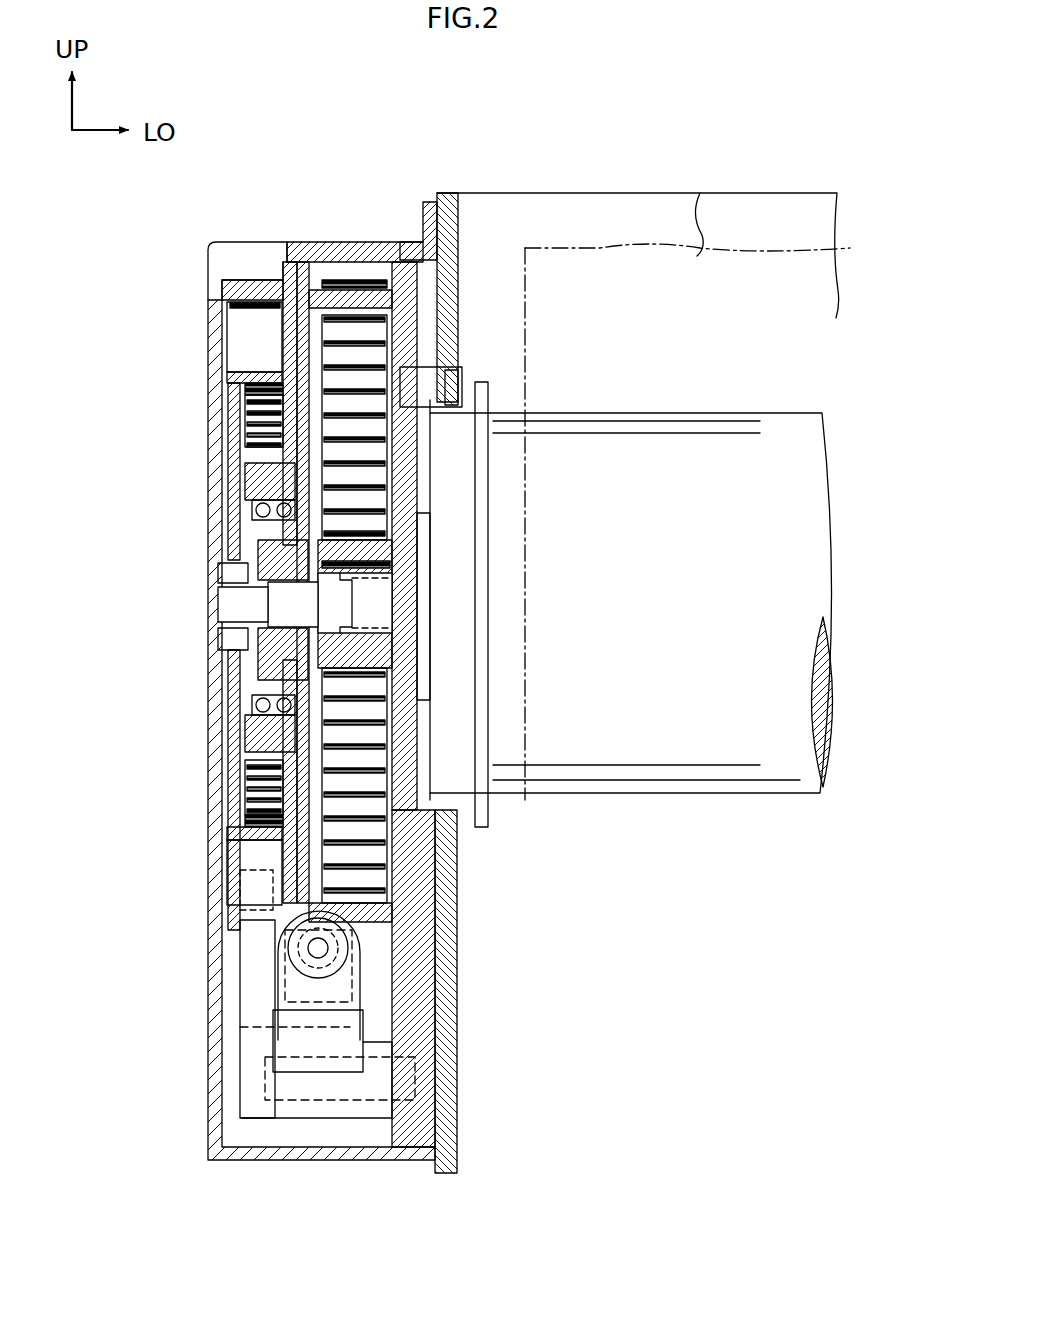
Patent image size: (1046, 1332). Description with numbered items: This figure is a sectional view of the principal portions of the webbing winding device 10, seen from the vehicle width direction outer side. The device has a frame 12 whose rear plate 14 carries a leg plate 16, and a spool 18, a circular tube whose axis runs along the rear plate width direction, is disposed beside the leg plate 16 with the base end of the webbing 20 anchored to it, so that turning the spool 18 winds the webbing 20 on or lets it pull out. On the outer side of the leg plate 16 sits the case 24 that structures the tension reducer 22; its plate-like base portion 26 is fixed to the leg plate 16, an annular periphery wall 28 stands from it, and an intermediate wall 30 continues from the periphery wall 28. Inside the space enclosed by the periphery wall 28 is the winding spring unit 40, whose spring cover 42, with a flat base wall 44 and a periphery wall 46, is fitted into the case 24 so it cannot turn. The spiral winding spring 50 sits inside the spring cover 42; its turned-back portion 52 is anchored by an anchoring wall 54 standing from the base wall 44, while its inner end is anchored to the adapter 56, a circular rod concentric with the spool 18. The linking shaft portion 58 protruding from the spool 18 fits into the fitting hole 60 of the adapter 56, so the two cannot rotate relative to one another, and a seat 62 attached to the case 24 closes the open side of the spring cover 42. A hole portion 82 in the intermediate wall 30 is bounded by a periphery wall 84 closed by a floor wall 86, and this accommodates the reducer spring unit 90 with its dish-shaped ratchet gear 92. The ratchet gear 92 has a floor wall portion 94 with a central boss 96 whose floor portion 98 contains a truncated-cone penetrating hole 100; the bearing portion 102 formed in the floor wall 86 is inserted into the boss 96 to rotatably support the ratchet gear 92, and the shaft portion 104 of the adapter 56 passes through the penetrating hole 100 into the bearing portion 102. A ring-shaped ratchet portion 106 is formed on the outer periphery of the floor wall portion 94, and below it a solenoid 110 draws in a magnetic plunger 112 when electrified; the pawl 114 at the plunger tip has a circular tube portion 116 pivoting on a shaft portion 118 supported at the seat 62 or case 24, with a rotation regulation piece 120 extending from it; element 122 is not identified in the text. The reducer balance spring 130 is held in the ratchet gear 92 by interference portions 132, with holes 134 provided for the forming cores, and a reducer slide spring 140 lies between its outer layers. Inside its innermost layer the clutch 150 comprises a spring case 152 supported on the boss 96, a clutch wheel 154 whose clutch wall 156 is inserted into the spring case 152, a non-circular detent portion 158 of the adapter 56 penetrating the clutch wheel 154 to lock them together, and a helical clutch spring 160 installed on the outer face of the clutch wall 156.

The webbing winding device 10 is at (778, 106).
The frame 12 is at (622, 190).
The rear plate 14 is at (557, 196).
The leg plate 16 is at (450, 215).
The spool 18 is at (508, 440).
The webbing 20 is at (700, 230).
The tension reducer 22 is at (268, 208).
The case 24 is at (386, 242).
The base portion 26 is at (412, 230).
The periphery wall 28 is at (352, 285).
The intermediate wall 30 is at (288, 280).
The winding spring unit 40 is at (458, 292).
The spring cover 42 is at (420, 930).
The base wall 44 is at (345, 832).
The periphery wall 46 is at (385, 922).
The winding spring 50 is at (375, 730).
The turned-back portion 52 is at (377, 282).
The anchoring wall 54 is at (345, 300).
The adapter 56 is at (392, 650).
The linking shaft portion 58 is at (380, 590).
The fitting hole 60 is at (395, 622).
The seat 62 is at (428, 1030).
The hole portion 82 is at (302, 275).
The periphery wall 84 is at (236, 296).
The floor wall 86 is at (228, 350).
The reducer spring unit 90 is at (210, 268).
The ratchet gear 92 is at (222, 520).
The floor wall portion 94 is at (250, 420).
The boss 96 is at (226, 586).
The floor portion 98 is at (232, 566).
The penetrating hole 100 is at (226, 635).
The bearing portion 102 is at (262, 655).
The shaft portion 104 is at (238, 604).
The ratchet portion 106 is at (236, 905).
The solenoid 110 is at (355, 945).
The plunger 112 is at (326, 968).
The pawl 114 is at (236, 990).
The circular tube portion 116 is at (372, 1120).
The shaft portion 118 is at (342, 1092).
The rotation regulation piece 120 is at (240, 1020).
The strainer 122 is at (305, 1012).
The reducer balance spring 130 is at (262, 447).
The interference portions 132 is at (240, 306).
The holes 134 is at (250, 830).
The reducer slide spring 140 is at (246, 388).
The clutch 150 is at (255, 760).
The spring case 152 is at (250, 800).
The clutch wheel 154 is at (397, 540).
The clutch wall 156 is at (262, 500).
The detent portion 158 is at (400, 598).
The clutch spring 160 is at (262, 718).